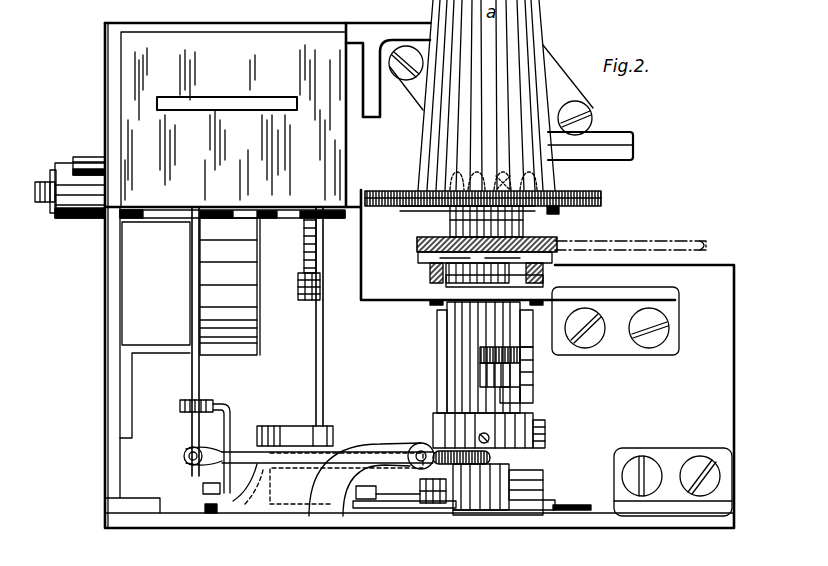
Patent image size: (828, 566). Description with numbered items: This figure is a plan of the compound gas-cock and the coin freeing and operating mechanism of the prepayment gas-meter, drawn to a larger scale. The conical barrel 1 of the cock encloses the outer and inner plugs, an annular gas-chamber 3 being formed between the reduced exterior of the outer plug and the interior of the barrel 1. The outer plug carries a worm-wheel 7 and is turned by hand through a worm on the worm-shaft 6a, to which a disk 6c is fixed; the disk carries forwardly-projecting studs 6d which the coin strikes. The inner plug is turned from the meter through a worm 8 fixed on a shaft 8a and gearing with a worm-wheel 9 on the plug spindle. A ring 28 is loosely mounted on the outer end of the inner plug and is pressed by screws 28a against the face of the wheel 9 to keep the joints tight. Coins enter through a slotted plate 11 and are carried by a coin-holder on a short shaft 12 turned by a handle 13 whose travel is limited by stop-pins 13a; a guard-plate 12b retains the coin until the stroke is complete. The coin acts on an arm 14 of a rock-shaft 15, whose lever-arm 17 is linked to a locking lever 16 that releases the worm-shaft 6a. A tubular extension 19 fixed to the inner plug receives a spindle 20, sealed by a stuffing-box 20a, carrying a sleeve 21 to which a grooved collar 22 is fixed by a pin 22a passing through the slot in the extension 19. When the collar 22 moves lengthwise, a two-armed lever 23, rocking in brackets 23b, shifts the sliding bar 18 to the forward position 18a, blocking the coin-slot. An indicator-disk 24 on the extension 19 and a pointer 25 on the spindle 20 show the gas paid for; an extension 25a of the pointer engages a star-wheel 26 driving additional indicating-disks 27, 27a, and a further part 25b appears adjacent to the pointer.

The barrel 1 is at (486, 95).
The annular gas-chamber 3 is at (504, 175).
The worm-shaft 6a is at (394, 191).
The disk 6c is at (296, 277).
The forwardly-projecting studs 6d is at (305, 222).
The worm-wheel 7 is at (587, 203).
The worm 8 is at (470, 242).
The shaft 8a is at (620, 245).
The worm-wheel 9 is at (556, 247).
The slotted plate 11 is at (233, 119).
The short shaft 12 is at (62, 210).
The guard-plate 12b is at (190, 328).
The arm or handle 13 is at (80, 190).
The stop-pins 13a is at (85, 157).
The arm 14 is at (227, 212).
The rock-shaft 15 is at (256, 214).
The lever 16 is at (318, 372).
The lever-arm 17 is at (324, 250).
The sliding bar 18 is at (200, 377).
The forward position of sliding bar 18a is at (186, 458).
The tubular extension 19 is at (486, 356).
The spindle 20 is at (485, 375).
The stuffing-box 20a is at (529, 381).
The sleeve 21 is at (518, 394).
The grooved collar 22 is at (483, 430).
The pin 22a is at (446, 440).
The two-armed lever 23 is at (243, 451).
The brackets 23b is at (326, 515).
The indicator-disk 24 is at (566, 507).
The pointer or index 25 is at (509, 487).
The extension of pointer 25a is at (549, 505).
The base of bearing block 25b is at (499, 548).
The star-wheel 26 is at (428, 490).
The indicating-disk 27 is at (417, 516).
The indicating-disk 27a is at (210, 503).
The ring 28 is at (420, 247).
The screws 28a is at (577, 277).